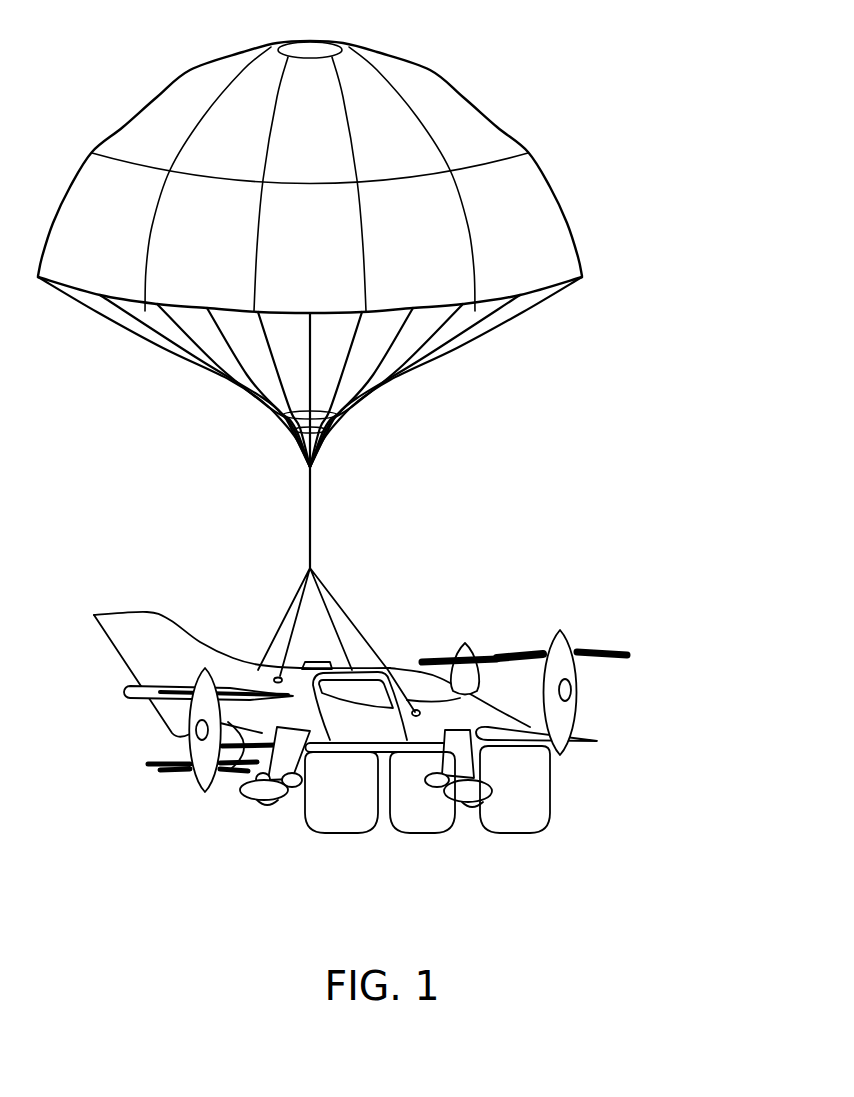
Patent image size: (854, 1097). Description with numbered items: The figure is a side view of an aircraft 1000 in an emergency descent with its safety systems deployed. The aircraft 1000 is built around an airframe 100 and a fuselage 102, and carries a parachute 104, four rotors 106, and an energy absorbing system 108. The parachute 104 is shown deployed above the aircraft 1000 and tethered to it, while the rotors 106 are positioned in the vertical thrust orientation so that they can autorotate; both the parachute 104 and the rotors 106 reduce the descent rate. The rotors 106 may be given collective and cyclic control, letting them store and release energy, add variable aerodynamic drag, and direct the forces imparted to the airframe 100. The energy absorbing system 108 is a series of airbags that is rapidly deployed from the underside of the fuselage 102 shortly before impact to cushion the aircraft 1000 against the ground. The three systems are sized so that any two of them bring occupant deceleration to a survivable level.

The aircraft 1000 is at (676, 185).
The airframe 100 is at (195, 567).
The fuselage 102 is at (428, 707).
The parachute 104 is at (413, 73).
The rotors 106 is at (190, 768).
The energy absorbing system 108 is at (343, 834).